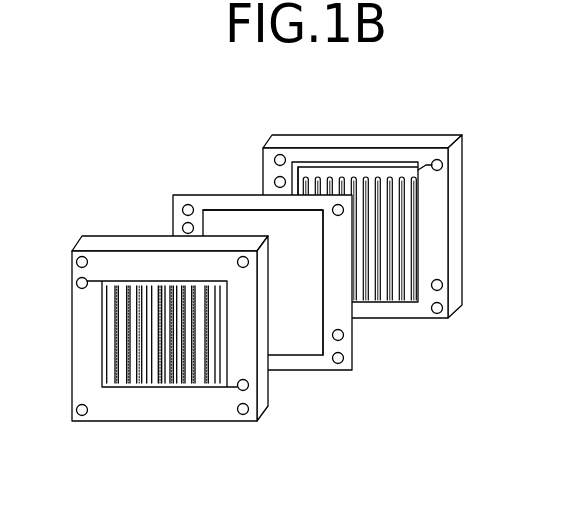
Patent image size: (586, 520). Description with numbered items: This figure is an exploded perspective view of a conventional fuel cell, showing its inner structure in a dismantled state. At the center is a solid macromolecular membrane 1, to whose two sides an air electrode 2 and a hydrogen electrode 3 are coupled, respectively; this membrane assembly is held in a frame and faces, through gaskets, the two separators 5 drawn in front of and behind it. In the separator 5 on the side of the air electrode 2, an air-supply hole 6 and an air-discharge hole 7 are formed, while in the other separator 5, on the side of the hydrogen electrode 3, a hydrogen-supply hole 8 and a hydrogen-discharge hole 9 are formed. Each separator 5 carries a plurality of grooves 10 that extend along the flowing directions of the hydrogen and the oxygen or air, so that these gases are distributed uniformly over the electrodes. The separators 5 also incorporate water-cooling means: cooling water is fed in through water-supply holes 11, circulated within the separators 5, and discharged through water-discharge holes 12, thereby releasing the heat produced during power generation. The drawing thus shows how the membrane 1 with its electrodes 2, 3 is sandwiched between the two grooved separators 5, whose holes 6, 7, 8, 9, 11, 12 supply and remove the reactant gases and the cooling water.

The solid macromolecular membrane 1 is at (213, 200).
The air electrode 2 is at (210, 218).
The hydrogen electrode 3 is at (240, 193).
The separator 5 is at (264, 273).
The air-supply hole 6 is at (76, 262).
The air-discharge hole 7 is at (243, 416).
The hydrogen-supply hole 8 is at (437, 158).
The hydrogen-discharge hole 9 is at (76, 410).
The grooves 10 is at (405, 248).
The water-supply hole 11 is at (76, 283).
The water-discharge hole 12 is at (249, 385).